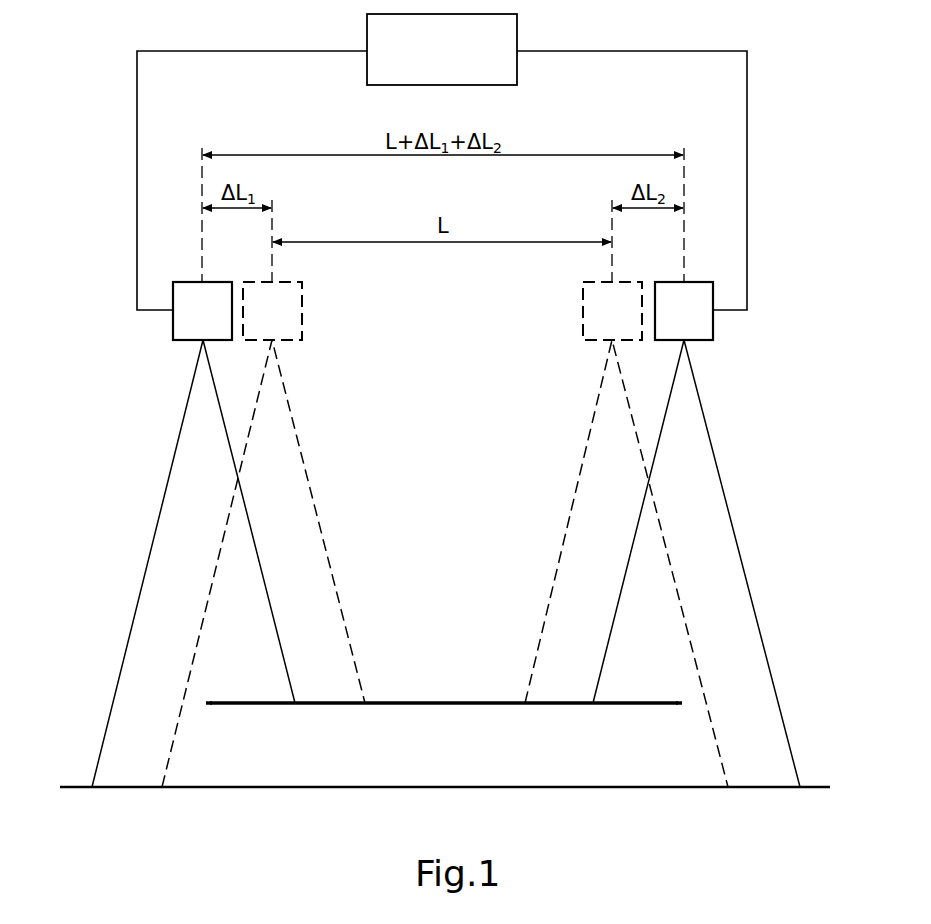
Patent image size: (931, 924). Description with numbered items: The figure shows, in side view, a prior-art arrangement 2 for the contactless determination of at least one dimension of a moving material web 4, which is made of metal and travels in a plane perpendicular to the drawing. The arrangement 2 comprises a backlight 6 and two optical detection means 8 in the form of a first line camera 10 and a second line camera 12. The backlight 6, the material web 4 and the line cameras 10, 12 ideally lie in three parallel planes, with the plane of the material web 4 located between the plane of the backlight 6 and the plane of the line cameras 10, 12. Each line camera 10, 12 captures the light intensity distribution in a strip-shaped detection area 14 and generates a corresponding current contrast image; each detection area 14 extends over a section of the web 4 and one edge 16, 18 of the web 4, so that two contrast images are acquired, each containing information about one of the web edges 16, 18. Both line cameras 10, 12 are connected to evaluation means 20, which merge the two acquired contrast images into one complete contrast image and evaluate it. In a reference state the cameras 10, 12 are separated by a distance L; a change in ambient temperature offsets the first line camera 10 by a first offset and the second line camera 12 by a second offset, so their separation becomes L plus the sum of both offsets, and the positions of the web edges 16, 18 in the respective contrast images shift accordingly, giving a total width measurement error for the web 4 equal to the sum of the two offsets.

The arrangement 2 is at (105, 457).
The material web 4 is at (640, 702).
The backlight 6 is at (656, 789).
The optical detection means 8 is at (409, 294).
The first line camera 10 is at (187, 281).
The second line camera 12 is at (700, 281).
The detection area 14 is at (742, 550).
The edge of the web 16 is at (205, 702).
The edge of the web 18 is at (683, 702).
The evaluation means 20 is at (428, 64).